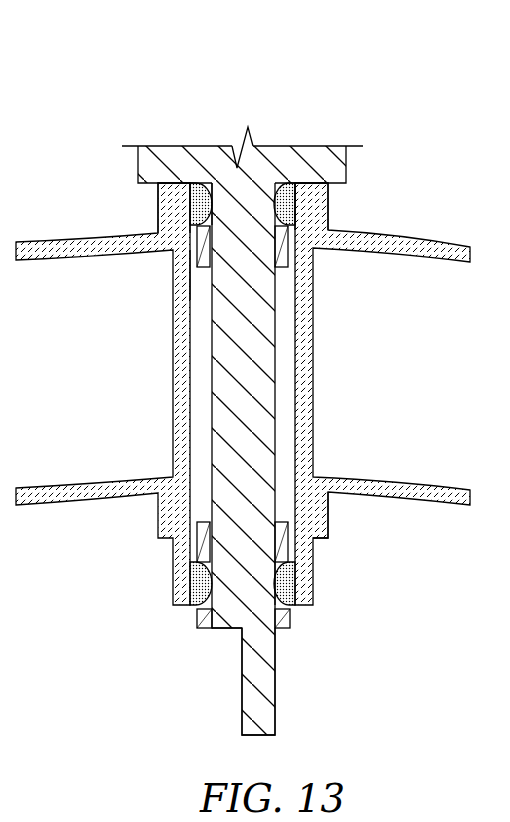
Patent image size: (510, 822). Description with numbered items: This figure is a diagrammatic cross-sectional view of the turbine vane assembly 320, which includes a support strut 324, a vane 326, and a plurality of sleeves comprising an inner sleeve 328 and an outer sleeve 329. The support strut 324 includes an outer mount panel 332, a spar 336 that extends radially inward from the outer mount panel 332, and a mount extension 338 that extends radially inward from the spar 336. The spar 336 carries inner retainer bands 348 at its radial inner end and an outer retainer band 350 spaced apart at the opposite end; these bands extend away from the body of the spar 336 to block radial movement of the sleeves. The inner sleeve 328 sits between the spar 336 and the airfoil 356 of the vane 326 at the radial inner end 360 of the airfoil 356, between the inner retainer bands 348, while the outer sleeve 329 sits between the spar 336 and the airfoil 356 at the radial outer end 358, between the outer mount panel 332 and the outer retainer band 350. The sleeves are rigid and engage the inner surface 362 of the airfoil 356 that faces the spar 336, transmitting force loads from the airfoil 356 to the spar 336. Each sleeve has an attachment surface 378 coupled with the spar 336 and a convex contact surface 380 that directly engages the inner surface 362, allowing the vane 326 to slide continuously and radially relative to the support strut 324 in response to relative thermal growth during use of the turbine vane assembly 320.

The turbine vane assembly 320 is at (164, 70).
The support strut 324 is at (217, 648).
The vane 326 is at (382, 403).
The inner sleeve 328 is at (298, 624).
The outer sleeve 329 is at (158, 205).
The outer mount panel 332 is at (347, 168).
The spar 336 is at (200, 414).
The mount extension 338 is at (288, 715).
The inner retainer bands 348 is at (195, 615).
The outer retainer band 350 is at (190, 257).
The airfoil 356 is at (313, 382).
The radial outer end 358 is at (342, 208).
The radial inner end 360 is at (342, 521).
The inner surface 362 is at (178, 364).
The attachment surface 378 is at (221, 206).
The contact surface 380 is at (172, 201).